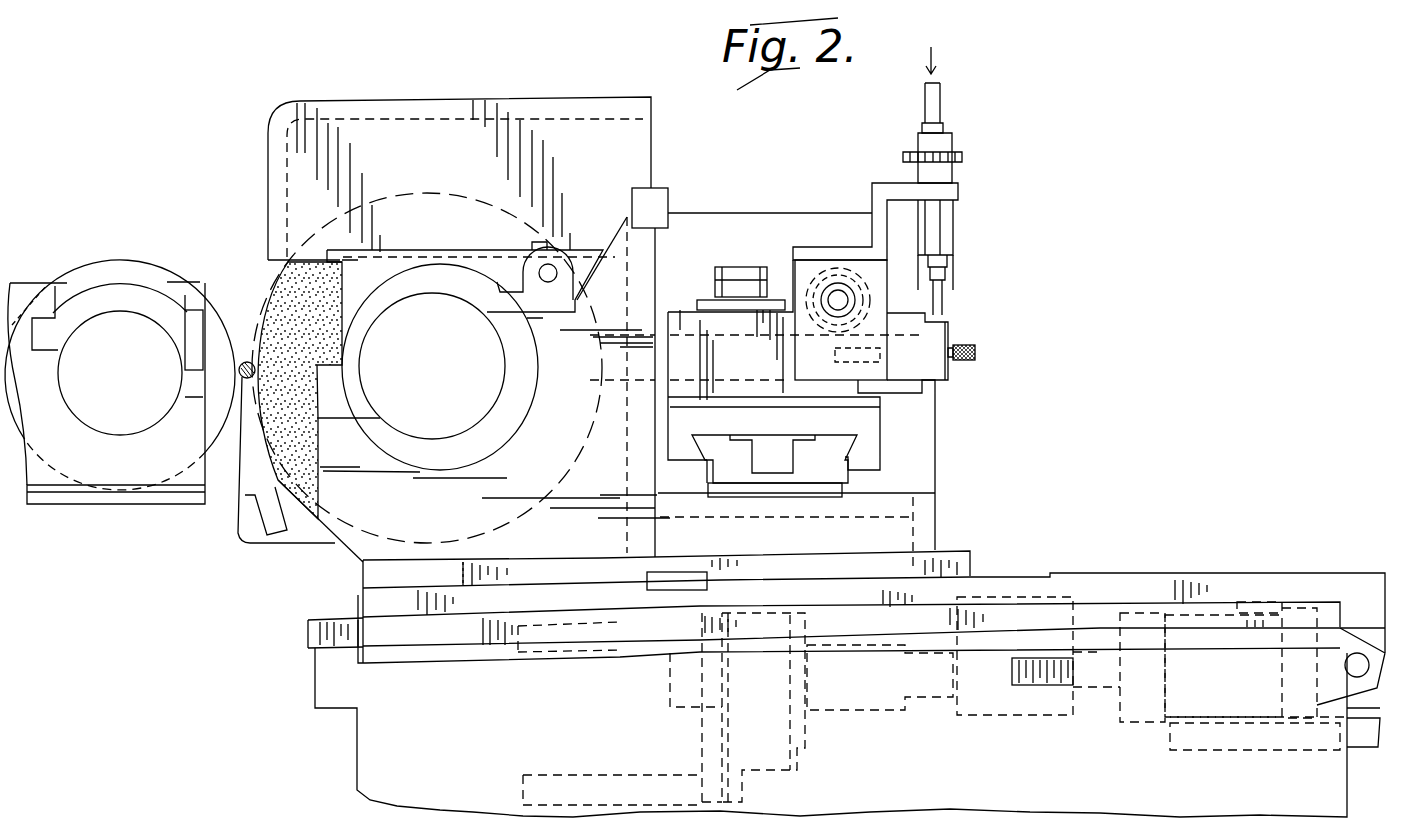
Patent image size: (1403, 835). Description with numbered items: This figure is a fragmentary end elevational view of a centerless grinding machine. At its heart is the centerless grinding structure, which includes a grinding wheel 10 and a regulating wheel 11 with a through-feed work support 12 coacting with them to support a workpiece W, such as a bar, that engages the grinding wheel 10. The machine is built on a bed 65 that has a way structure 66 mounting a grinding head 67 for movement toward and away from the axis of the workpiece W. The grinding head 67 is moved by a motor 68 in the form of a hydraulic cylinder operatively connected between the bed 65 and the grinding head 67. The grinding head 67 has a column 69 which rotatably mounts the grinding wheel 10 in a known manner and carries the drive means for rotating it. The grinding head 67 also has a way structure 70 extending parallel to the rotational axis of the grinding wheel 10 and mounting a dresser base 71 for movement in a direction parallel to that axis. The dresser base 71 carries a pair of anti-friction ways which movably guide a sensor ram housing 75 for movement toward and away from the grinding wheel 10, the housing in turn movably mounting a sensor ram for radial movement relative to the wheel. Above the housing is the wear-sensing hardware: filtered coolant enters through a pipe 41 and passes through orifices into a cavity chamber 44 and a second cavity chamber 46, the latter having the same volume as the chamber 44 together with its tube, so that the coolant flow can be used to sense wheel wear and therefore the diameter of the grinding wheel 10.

The grinding wheel 10 is at (290, 285).
The regulating wheel 11 is at (108, 264).
The through-feed work support 12 is at (258, 470).
The workpiece W is at (248, 361).
The pipe 41 is at (935, 103).
The cavity chamber 44 is at (940, 218).
The second cavity chamber 46 is at (950, 277).
The bed 65 is at (380, 773).
The way structure 66 is at (320, 633).
The grinding head 67 is at (954, 550).
The motor 68 is at (1182, 703).
The column 69 is at (368, 550).
The way structure 70 is at (825, 460).
The dresser base 71 is at (860, 416).
The sensor ram housing 75 is at (682, 317).